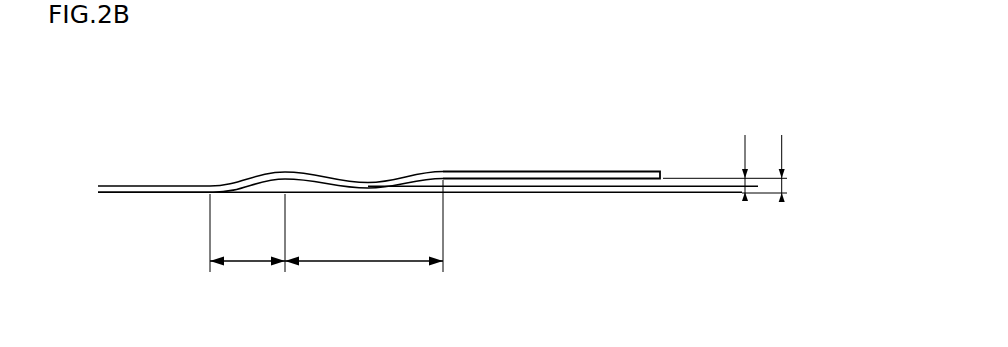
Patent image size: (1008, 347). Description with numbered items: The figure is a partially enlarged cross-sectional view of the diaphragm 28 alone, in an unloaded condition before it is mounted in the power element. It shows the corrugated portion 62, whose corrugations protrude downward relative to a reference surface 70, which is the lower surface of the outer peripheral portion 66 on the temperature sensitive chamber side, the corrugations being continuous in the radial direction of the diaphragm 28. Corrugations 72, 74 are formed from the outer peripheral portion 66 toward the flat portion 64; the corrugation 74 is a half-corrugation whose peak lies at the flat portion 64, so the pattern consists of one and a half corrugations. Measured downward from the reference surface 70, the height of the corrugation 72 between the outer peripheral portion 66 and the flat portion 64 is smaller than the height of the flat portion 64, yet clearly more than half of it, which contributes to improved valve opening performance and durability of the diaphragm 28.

The diaphragm 28 is at (626, 110).
The corrugated portion 62 is at (291, 148).
The flat portion 64 is at (138, 185).
The outer peripheral portion 66 is at (543, 172).
The reference surface 70 is at (570, 181).
The corrugation 72 is at (388, 193).
The corrugation 74 is at (233, 190).